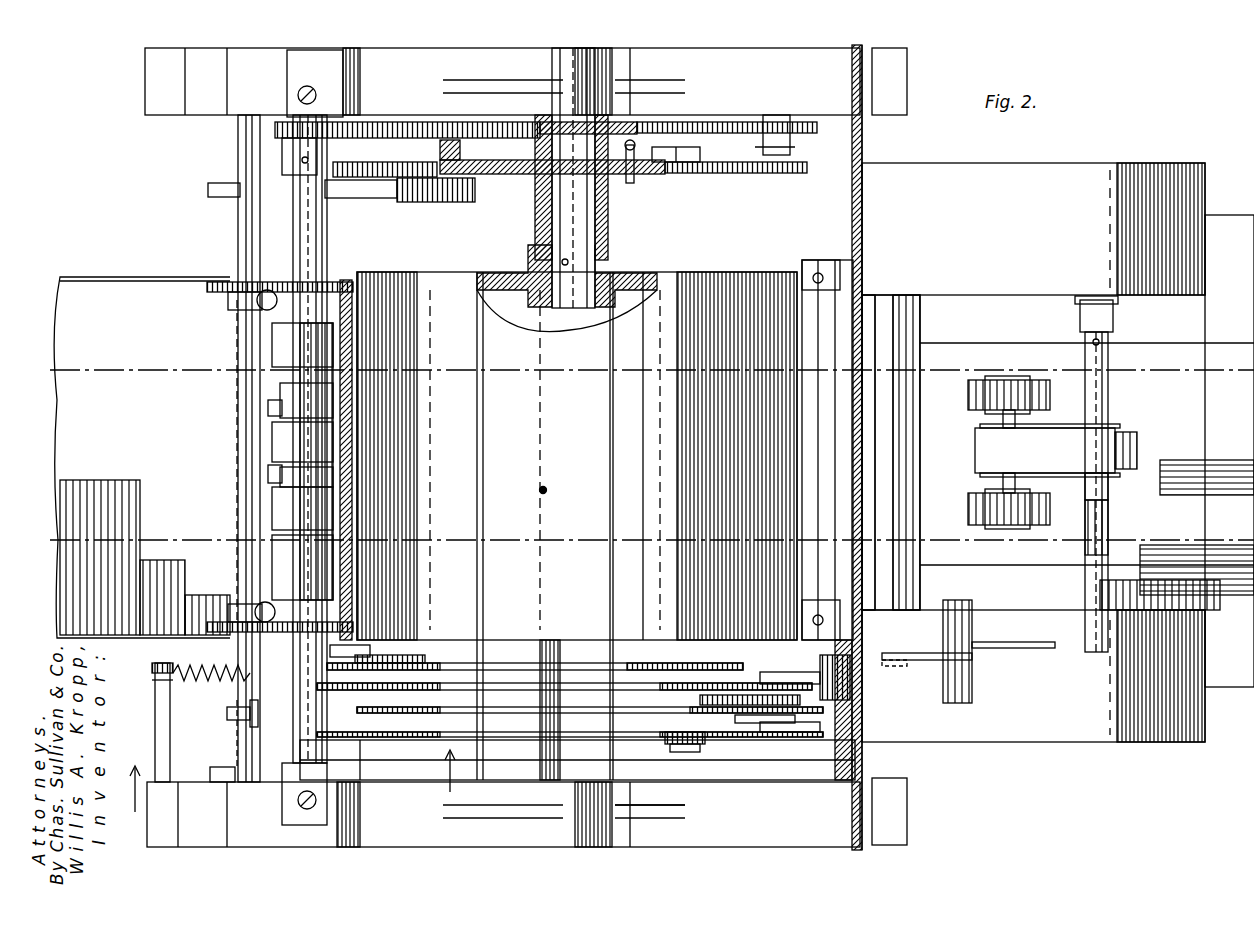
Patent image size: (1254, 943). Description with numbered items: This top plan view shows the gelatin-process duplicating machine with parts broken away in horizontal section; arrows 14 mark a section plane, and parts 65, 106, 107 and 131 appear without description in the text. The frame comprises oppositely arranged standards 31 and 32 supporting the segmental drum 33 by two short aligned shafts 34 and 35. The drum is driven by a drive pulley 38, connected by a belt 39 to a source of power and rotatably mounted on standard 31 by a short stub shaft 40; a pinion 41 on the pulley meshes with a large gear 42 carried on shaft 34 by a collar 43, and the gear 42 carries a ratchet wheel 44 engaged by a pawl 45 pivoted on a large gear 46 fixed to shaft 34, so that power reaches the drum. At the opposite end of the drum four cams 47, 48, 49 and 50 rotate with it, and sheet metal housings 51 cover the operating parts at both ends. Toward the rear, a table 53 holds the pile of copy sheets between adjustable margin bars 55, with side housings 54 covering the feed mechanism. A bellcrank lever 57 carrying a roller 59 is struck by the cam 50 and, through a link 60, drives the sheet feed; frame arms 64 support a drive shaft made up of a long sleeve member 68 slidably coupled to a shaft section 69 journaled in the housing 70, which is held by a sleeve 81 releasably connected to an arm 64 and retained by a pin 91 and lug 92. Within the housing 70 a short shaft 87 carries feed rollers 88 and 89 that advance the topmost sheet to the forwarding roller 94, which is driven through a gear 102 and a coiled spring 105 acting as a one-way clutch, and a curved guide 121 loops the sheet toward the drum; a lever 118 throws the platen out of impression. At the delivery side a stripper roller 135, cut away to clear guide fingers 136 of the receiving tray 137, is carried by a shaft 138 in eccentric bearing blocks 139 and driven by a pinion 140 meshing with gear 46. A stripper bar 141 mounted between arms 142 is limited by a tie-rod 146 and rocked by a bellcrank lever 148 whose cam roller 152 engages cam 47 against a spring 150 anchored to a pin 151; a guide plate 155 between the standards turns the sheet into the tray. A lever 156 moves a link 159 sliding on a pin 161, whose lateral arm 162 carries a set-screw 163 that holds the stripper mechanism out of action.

The section line 14 is at (290, 783).
The standard 31 is at (206, 102).
The standard 32 is at (430, 832).
The drum 33 is at (612, 258).
The short shaft 34 is at (552, 215).
The short shaft 35 is at (590, 753).
The drive pulley 38 is at (362, 198).
The belt 39 is at (218, 183).
The short stub shaft 40 is at (400, 202).
The pinion 41 is at (378, 158).
The large gear 42 is at (722, 174).
The collar 43 is at (610, 215).
The ratchet wheel 44 is at (665, 170).
The pawl 45 is at (742, 150).
The large gear 46 is at (720, 122).
The cam 47 is at (620, 663).
The cam 48 is at (630, 683).
The cam 49 is at (405, 733).
The cam 50 is at (508, 732).
The sheet metal housing 51 is at (890, 76).
The table 53 is at (912, 312).
The sheet metal housing 54 is at (1018, 180).
The adjustable side margin bar 55 is at (1212, 560).
The bellcrank lever 57 is at (765, 738).
The roller 59 is at (700, 744).
The link 60 is at (845, 722).
The frame arm 64 is at (822, 662).
The upper bracket 65 is at (840, 270).
The long sleeve member 68 is at (1108, 512).
The shaft section 69 is at (1086, 489).
The housing 70 is at (1095, 440).
The sleeve 81 is at (1104, 385).
The short shaft 87 is at (1000, 421).
The roller 88 is at (978, 498).
The roller 89 is at (975, 397).
The pin 91 is at (1115, 312).
The lug 92 is at (1082, 313).
The forwarding roller 94 is at (878, 305).
The gear 102 is at (860, 668).
The coiled spring 105 is at (860, 680).
The slide bar 106 is at (720, 695).
The rack bar 107 is at (700, 698).
The lever 118 is at (985, 648).
The curved guide 121 is at (868, 292).
The block 131 is at (758, 676).
The stripper roller 135 is at (285, 345).
The guide finger 136 is at (268, 472).
The receiving tray 137 is at (165, 276).
The shaft 138 is at (310, 240).
The eccentric bearing block 139 is at (305, 750).
The pinion 140 is at (280, 122).
The stripper bar 141 is at (352, 470).
The arm 142 is at (238, 290).
The tie-rod 146 is at (240, 214).
The bellcrank lever 148 is at (370, 650).
The spring 150 is at (208, 663).
The pin 151 is at (162, 664).
The cam roller 152 is at (380, 656).
The guide plate 155 is at (318, 82).
The lever 156 is at (940, 650).
The link 159 is at (705, 782).
The pin 161 is at (224, 767).
The laterally extending arm 162 is at (258, 727).
The set-screw 163 is at (227, 710).